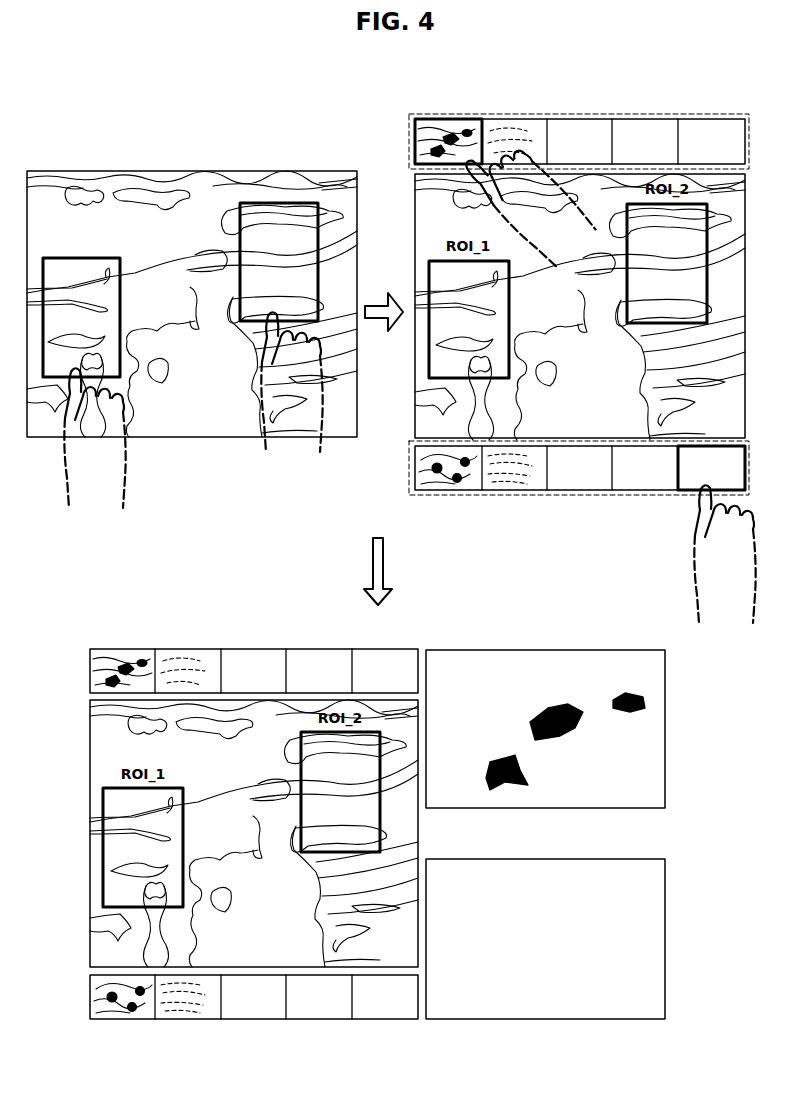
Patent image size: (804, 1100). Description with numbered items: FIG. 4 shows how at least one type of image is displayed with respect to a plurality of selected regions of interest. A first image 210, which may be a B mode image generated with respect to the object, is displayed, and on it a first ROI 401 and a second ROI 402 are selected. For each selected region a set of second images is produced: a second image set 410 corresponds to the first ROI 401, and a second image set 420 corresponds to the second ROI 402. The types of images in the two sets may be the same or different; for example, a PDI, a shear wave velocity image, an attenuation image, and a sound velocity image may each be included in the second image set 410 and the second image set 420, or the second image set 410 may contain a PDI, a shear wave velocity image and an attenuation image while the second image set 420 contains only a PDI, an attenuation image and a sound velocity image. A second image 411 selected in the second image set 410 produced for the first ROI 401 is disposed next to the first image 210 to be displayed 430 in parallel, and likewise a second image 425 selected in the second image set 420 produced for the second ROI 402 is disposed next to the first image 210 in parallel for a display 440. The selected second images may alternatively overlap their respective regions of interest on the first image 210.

The first image 210 is at (192, 171).
The first ROI 401 is at (114, 258).
The second ROI 402 is at (313, 203).
The second image set 410 is at (409, 142).
The second image 411 is at (450, 119).
The second image set 420 is at (409, 472).
The second image 425 is at (690, 496).
The display 430 is at (547, 650).
The display 440 is at (547, 859).